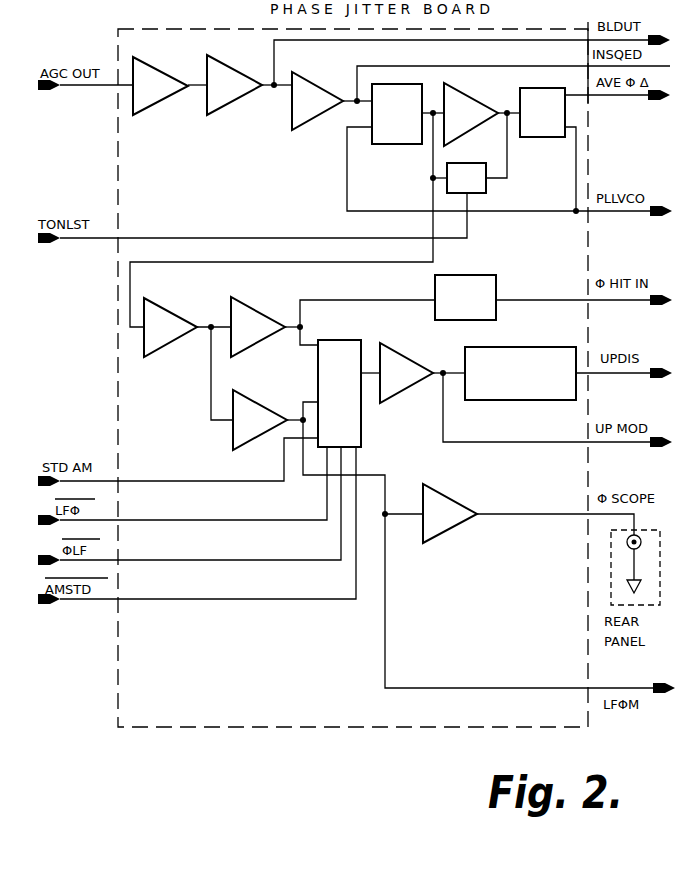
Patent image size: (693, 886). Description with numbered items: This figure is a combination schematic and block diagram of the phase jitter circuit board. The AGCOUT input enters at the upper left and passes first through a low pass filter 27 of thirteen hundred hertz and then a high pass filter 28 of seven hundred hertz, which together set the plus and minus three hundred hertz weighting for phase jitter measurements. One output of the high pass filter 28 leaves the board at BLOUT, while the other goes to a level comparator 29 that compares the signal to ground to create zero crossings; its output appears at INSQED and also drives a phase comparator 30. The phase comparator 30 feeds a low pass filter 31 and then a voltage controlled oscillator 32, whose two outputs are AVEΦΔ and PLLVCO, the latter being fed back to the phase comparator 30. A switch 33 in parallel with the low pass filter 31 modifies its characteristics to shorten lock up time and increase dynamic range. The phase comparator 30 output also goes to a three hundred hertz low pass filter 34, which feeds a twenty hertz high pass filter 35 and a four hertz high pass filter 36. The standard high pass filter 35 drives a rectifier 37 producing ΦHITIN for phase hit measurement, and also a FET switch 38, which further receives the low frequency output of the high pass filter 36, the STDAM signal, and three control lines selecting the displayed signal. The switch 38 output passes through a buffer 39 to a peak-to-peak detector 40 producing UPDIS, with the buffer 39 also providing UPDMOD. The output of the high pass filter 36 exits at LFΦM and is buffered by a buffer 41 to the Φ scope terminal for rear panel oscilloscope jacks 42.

The 1300 Hz low pass filter 27 is at (162, 102).
The 700 Hz high pass filter 28 is at (246, 98).
The level comparator 29 is at (320, 118).
The phase comparator 30 is at (398, 146).
The low pass filter 31 is at (470, 97).
The voltage controlled oscillator 32 is at (556, 138).
The switch 33 is at (488, 190).
The 300 Hz low pass filter 34 is at (180, 306).
The 20 Hz high pass filter 35 is at (270, 306).
The 4 Hz high pass filter 36 is at (249, 397).
The rectifier 37 is at (495, 276).
The FET switch 38 is at (330, 340).
The buffer 39 is at (403, 356).
The peak-to-peak detector 40 is at (528, 347).
The buffer 41 is at (452, 497).
The oscilloscope jacks 42 is at (611, 550).